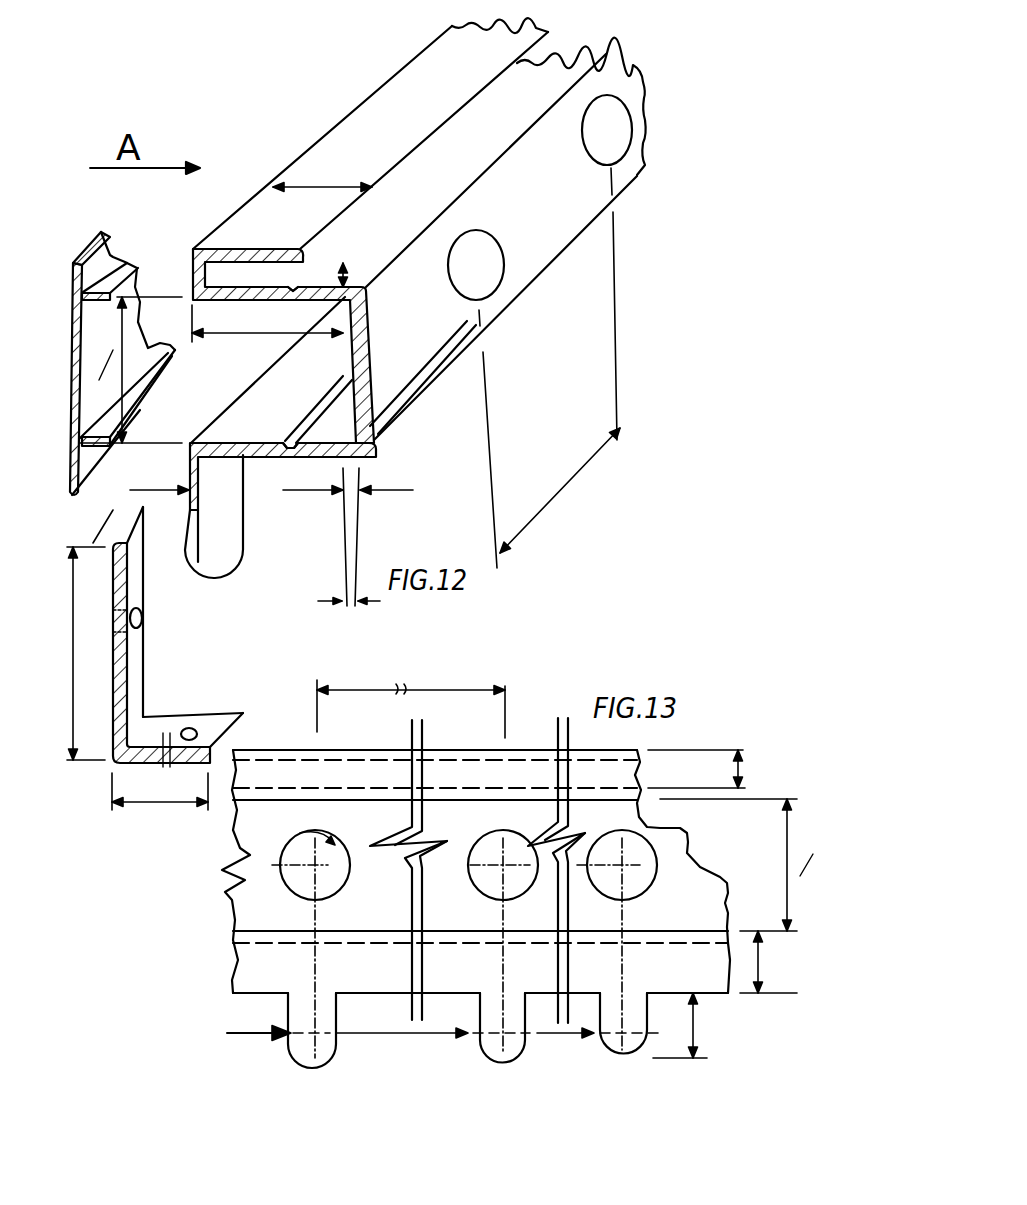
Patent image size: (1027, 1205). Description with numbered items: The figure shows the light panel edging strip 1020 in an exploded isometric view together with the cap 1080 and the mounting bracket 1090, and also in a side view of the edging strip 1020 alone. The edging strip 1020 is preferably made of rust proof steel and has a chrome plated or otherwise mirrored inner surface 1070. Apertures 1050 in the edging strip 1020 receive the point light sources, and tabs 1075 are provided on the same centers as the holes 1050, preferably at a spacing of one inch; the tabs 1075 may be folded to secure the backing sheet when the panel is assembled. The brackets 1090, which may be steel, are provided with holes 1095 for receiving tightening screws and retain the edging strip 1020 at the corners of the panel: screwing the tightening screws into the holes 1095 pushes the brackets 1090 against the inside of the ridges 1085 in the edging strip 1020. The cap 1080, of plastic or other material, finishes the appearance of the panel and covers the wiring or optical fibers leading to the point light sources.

In FIG. 12, the edging strip 1020 is at (308, 146).
In FIG. 13, the edging strip 1020 is at (394, 749).
In FIG. 12, the apertures 1050 is at (622, 125).
In FIG. 13, the apertures 1050 is at (330, 876).
In FIG. 12, the mirrored inner surface 1070 is at (515, 311).
In FIG. 12, the tabs 1075 is at (228, 537).
In FIG. 13, the tabs 1075 is at (327, 1046).
In FIG. 12, the cap 1080 is at (148, 358).
In FIG. 12, the ridges 1085 is at (297, 305).
In FIG. 12, the mounting bracket 1090 is at (118, 718).
In FIG. 12, the holes 1095 is at (143, 616).